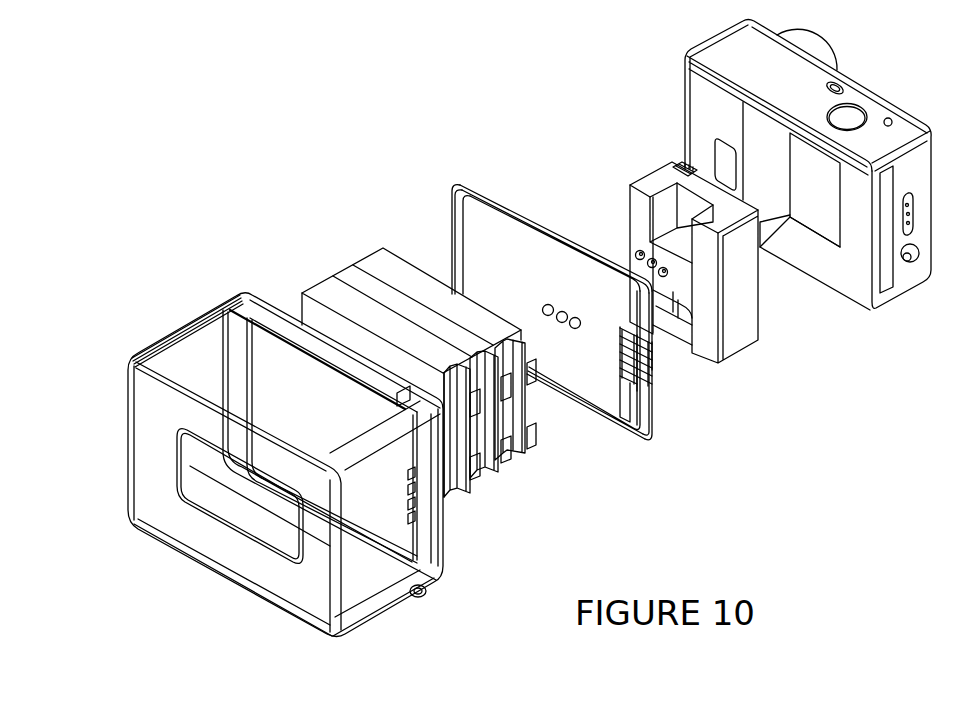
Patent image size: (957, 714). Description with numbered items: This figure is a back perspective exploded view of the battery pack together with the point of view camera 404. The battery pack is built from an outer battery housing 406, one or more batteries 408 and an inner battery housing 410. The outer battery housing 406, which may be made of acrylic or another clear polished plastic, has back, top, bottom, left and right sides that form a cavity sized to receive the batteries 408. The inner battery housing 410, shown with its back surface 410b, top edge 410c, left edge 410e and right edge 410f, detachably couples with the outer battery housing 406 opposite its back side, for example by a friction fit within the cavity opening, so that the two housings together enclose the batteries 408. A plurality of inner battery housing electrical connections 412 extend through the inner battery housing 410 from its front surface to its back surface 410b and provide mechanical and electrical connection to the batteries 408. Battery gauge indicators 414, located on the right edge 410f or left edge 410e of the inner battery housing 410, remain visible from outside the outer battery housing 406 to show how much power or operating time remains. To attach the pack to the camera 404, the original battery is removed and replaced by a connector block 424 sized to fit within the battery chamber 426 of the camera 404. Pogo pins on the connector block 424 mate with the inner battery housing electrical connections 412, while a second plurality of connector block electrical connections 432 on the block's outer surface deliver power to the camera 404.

The camera 404 is at (808, 184).
The outer battery housing 406 is at (177, 332).
The batteries 408 is at (419, 360).
The inner battery housing 410 is at (545, 321).
The back surface 410b is at (600, 402).
The top edge 410c is at (520, 213).
The left edge 410e is at (452, 238).
The right edge 410f is at (650, 422).
The inner battery housing electrical connections 412 is at (557, 320).
The battery gauge indicators 414 is at (652, 355).
The connector block 424 is at (665, 230).
The battery chamber 426 is at (817, 250).
The second plurality of connector block electrical connections 432 is at (680, 165).